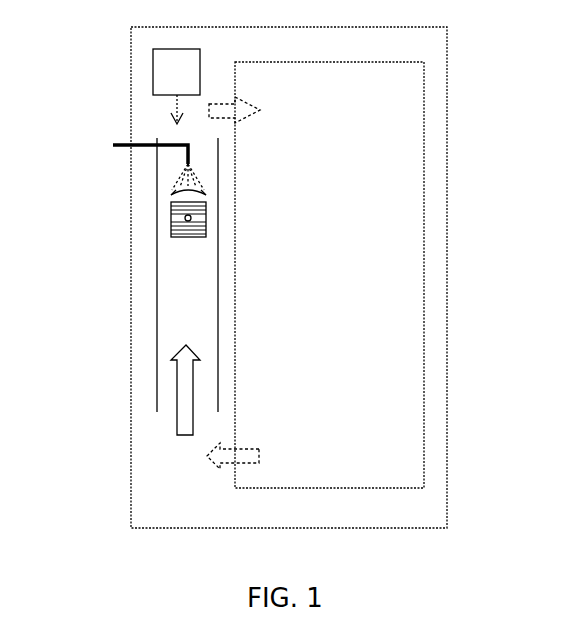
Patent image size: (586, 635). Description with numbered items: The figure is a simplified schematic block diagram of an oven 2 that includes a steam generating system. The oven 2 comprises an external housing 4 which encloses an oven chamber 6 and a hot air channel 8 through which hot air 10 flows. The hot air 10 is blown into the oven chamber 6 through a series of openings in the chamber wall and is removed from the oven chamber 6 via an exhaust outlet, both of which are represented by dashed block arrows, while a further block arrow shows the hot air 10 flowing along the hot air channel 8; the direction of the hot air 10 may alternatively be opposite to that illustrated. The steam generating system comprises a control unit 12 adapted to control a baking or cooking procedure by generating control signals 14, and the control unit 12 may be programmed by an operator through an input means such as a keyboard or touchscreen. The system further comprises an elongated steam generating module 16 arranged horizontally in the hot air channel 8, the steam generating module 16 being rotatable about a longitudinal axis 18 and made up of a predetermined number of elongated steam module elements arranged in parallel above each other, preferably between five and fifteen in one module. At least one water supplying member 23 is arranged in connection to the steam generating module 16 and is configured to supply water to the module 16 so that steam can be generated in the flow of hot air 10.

The oven 2 is at (82, 81).
The external housing 4 is at (447, 86).
The oven chamber 6 is at (329, 275).
The hot air channel 8 is at (157, 275).
The hot air 10 is at (243, 110).
The control unit 12 is at (176, 72).
The control signals 14 is at (166, 109).
The steam generating module 16 is at (190, 209).
The longitudinal axis 18 is at (184, 217).
The water supplying member 23 is at (131, 145).